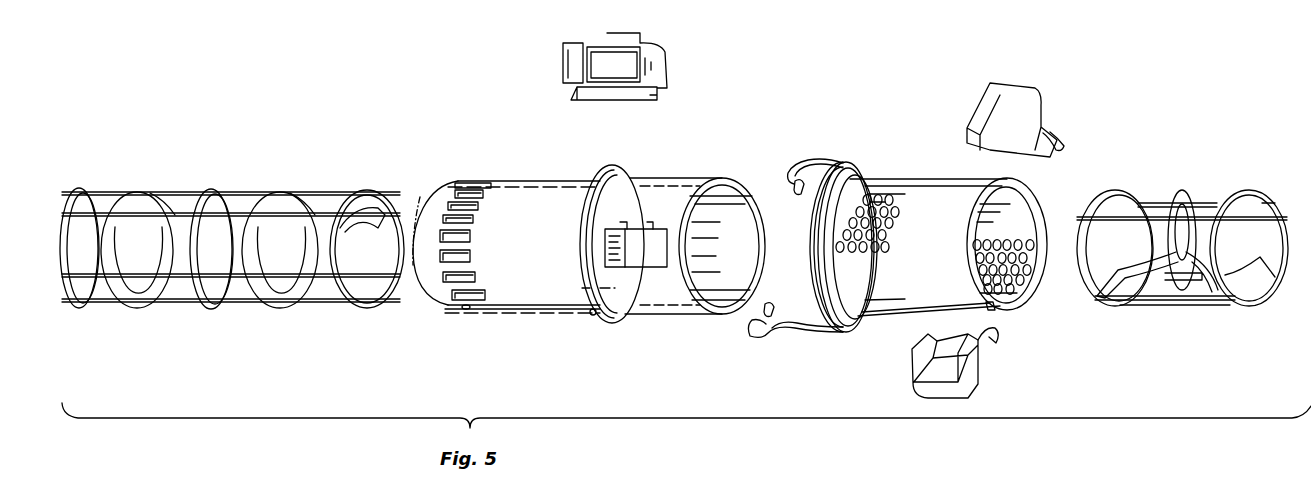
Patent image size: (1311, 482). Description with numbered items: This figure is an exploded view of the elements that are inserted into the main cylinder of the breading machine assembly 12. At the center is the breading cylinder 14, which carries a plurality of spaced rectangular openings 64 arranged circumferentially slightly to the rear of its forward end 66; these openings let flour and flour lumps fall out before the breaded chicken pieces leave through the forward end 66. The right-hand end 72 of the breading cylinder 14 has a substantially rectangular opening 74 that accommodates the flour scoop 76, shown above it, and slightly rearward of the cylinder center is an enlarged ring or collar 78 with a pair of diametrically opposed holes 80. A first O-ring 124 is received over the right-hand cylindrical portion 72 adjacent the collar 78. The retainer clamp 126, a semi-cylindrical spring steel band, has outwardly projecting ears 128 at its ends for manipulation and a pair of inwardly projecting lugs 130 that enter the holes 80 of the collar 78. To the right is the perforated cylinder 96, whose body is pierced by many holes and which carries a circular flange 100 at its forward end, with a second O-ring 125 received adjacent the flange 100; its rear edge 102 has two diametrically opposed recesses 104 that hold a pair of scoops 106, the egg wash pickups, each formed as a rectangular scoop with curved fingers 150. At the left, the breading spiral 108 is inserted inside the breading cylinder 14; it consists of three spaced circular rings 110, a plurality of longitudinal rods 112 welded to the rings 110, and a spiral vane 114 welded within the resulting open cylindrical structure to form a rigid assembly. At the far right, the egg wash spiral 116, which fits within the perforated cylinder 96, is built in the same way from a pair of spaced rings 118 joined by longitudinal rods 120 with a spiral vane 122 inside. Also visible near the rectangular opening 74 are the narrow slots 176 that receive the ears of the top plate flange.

The assembly 12 is at (783, 481).
The breading cylinder 14 is at (522, 183).
The rectangular openings 64 is at (470, 192).
The forward end 66 is at (425, 300).
The right-hand end 72 is at (688, 179).
The rectangular opening 74 is at (660, 268).
The flour scoop 76 is at (660, 53).
The collar 78 is at (594, 170).
The holes 80 is at (582, 314).
The perforated cylinder 96 is at (925, 179).
The circular flange 100 is at (870, 164).
The rear edge 102 is at (1030, 296).
The recesses 104 is at (986, 305).
The scoops 106 is at (1036, 90).
The breading spiral 108 is at (262, 190).
The circular rings 110 is at (86, 190).
The longitudinal rods 112 is at (148, 278).
The spiral vane 114 is at (374, 214).
The egg wash spiral 116 is at (1248, 190).
The spaced rings 118 is at (1112, 303).
The longitudinal rods 120 is at (1158, 202).
The spiral vane 122 is at (1243, 273).
The first O-ring 124 is at (636, 168).
The second O-ring 125 is at (874, 330).
The retainer clamp 126 is at (815, 314).
The ears 128 is at (820, 160).
The lugs 130 is at (795, 186).
The curved fingers 150 is at (1055, 142).
The narrow slots 176 is at (645, 268).